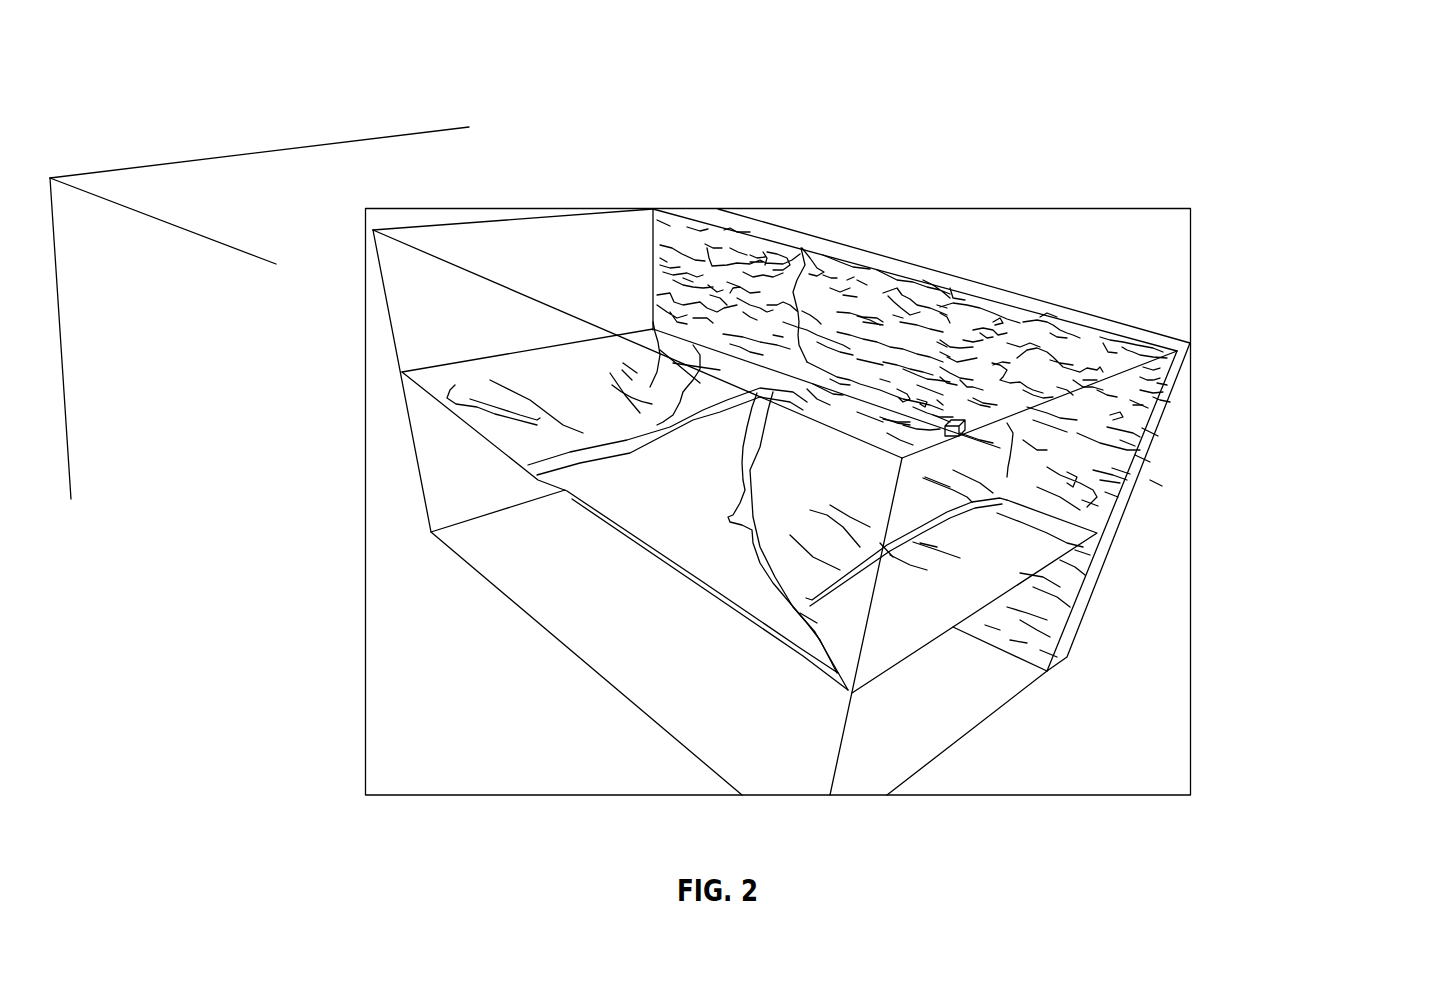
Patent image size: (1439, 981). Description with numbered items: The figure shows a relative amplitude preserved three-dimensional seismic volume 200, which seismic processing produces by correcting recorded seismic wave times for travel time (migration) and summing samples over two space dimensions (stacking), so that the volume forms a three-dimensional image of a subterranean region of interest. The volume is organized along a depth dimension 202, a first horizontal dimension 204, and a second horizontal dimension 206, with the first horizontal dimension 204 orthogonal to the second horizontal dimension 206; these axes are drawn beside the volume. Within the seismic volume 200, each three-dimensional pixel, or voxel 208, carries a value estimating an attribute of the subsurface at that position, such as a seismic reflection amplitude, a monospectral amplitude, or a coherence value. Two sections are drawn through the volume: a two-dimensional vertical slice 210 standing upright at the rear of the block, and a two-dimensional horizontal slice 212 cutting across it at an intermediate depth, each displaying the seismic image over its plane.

The relative amplitude preserved 3D seismic volume 200 is at (1005, 167).
The depth dimension 202 is at (67, 394).
The first horizontal dimension 204 is at (185, 231).
The second horizontal dimension 206 is at (285, 146).
The voxel 208 is at (963, 420).
The 2D vertical slice 210 is at (1133, 473).
The 2D horizontal slice 212 is at (623, 525).